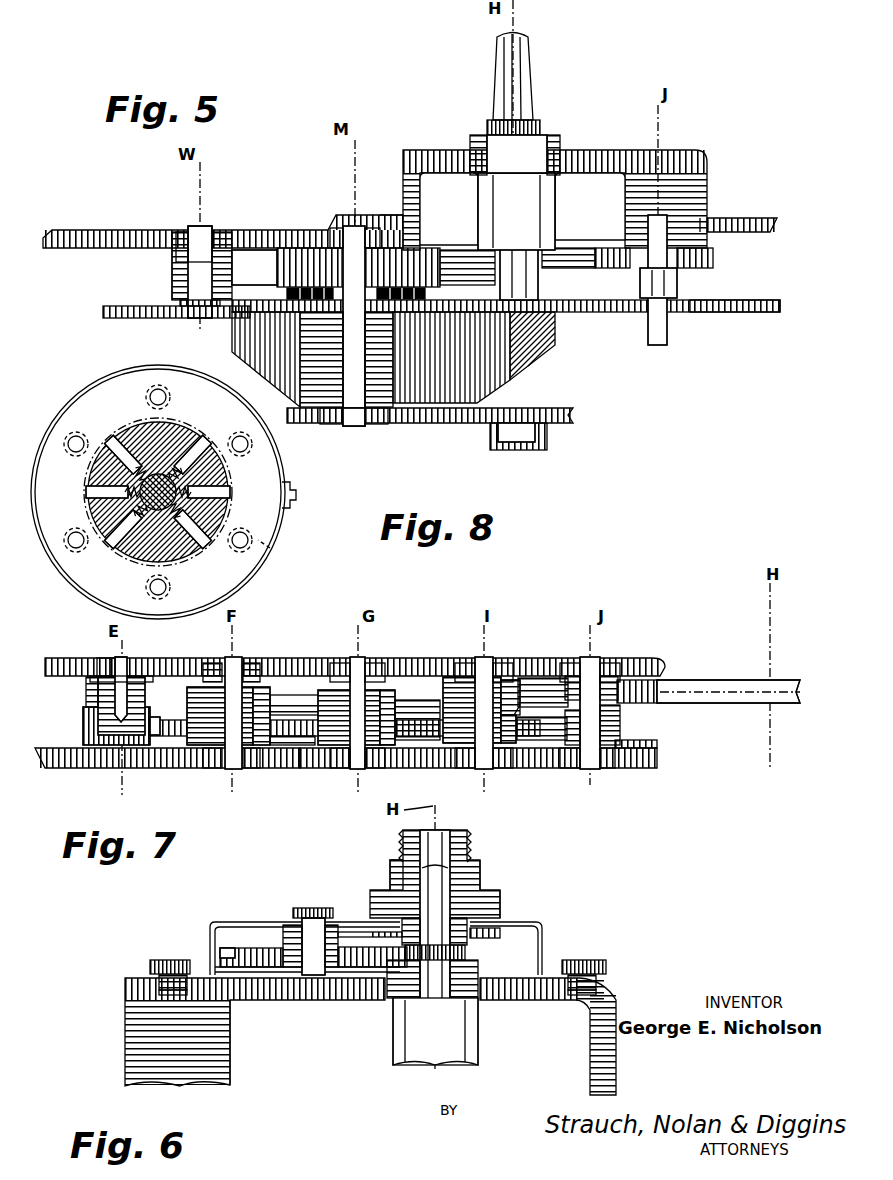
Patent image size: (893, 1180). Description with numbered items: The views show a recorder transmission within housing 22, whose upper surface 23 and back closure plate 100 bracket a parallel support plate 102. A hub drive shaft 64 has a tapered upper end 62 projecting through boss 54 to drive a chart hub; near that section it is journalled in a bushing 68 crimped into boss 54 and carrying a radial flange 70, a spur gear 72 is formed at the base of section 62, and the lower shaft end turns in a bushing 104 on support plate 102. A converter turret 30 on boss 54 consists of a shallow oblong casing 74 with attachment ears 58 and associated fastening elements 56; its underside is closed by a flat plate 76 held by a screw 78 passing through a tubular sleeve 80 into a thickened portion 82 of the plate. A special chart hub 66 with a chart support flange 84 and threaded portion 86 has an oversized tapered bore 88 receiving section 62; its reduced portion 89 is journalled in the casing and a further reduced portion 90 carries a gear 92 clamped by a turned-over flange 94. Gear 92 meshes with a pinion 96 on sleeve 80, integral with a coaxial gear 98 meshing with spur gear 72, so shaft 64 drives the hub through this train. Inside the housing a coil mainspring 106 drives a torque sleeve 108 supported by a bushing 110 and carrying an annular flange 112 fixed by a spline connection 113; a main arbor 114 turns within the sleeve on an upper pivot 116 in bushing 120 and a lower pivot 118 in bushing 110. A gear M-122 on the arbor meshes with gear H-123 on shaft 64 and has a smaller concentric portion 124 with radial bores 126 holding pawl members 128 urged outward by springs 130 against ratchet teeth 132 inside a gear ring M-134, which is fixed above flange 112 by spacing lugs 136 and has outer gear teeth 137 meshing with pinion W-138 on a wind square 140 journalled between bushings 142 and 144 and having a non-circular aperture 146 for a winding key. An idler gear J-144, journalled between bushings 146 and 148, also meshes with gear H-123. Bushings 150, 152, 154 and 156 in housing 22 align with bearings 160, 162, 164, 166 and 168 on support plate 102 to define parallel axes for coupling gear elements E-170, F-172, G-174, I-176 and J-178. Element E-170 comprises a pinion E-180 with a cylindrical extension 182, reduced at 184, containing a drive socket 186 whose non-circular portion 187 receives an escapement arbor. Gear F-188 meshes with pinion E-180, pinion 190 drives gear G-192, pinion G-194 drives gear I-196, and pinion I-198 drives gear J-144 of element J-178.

In FIG. 5, the housing 22 is at (746, 220).
In FIG. 7, the housing 22 is at (650, 658).
In FIG. 5, the upper surface of the housing 23 is at (108, 228).
In FIG. 7, the upper surface of the housing 23 is at (412, 696).
In FIG. 8, the turret 30 is at (158, 492).
In FIG. 6, the turret 30 is at (555, 920).
In FIG. 5, the boss 54 is at (708, 172).
In FIG. 6, the bolt 56 is at (150, 964).
In FIG. 6, the attachment ears 58 is at (196, 962).
In FIG. 5, the upper end of hub drive shaft 62 is at (520, 70).
In FIG. 6, the upper end of hub drive shaft 62 is at (455, 866).
In FIG. 5, the hub drive shaft 64 is at (540, 290).
In FIG. 6, the special chart hub 66 is at (486, 880).
In FIG. 5, the bushing 68 is at (562, 142).
In FIG. 5, the radial flange 70 is at (470, 140).
In FIG. 5, the spur gear 72 is at (545, 124).
In FIG. 6, the spur gear 72 is at (435, 946).
In FIG. 6, the oblong casing 74 is at (232, 922).
In FIG. 6, the flat plate 76 is at (262, 992).
In FIG. 6, the screw 78 is at (312, 993).
In FIG. 6, the tubular sleeve 80 is at (292, 993).
In FIG. 6, the thickened portion of the plate 82 is at (340, 999).
In FIG. 6, the radial chart support flange 84 is at (503, 904).
In FIG. 6, the threaded portion 86 is at (462, 838).
In FIG. 6, the tapered axial bore 88 is at (398, 864).
In FIG. 6, the reduced diameter portion 89 is at (378, 918).
In FIG. 6, the further reduced portion 90 is at (435, 963).
In FIG. 6, the gear 92 is at (506, 948).
In FIG. 6, the turned over flange 94 is at (432, 979).
In FIG. 6, the pinion 96 is at (302, 912).
In FIG. 6, the coaxial gear 98 is at (213, 1039).
In FIG. 5, the back closure plate 100 is at (436, 424).
In FIG. 5, the support plate 102 is at (110, 318).
In FIG. 7, the support plate 102 is at (64, 769).
In FIG. 5, the bushing 104 is at (556, 325).
In FIG. 5, the coil-type mainspring 106 is at (270, 377).
In FIG. 5, the torque sleeve 108 is at (326, 424).
In FIG. 5, the bushing 110 is at (378, 425).
In FIG. 5, the annular flange 112 is at (300, 386).
In FIG. 5, the spline connection 113 is at (343, 322).
In FIG. 5, the main arbor 114 is at (506, 299).
In FIG. 5, the upper pivot 116 is at (346, 226).
In FIG. 5, the lower pivot 118 is at (354, 427).
In FIG. 5, the bushing 120 is at (386, 215).
In FIG. 5, the concentric portion 124 is at (430, 273).
In FIG. 5, the radial bores 126 is at (369, 359).
In FIG. 8, the radial bores 126 is at (224, 498).
In FIG. 5, the pawl member 128 is at (309, 267).
In FIG. 8, the pawl member 128 is at (228, 487).
In FIG. 5, the spring 130 is at (357, 326).
In FIG. 8, the spring 130 is at (90, 490).
In FIG. 8, the ratchet teeth 132 is at (168, 438).
In FIG. 5, the spacing lugs 136 is at (258, 296).
In FIG. 8, the spacing lugs 136 is at (270, 548).
In FIG. 8, the gear teeth 137 is at (298, 495).
In FIG. 5, the wind square 140 is at (172, 264).
In FIG. 5, the bushing 142 is at (178, 232).
In FIG. 5, the bushing 144 is at (185, 318).
In FIG. 5, the non-circular internal aperture 146 is at (195, 228).
In FIG. 5, the bushing 148 is at (670, 315).
In FIG. 7, the bushing 150 is at (136, 660).
In FIG. 7, the bushing 152 is at (246, 656).
In FIG. 7, the bushing 154 is at (380, 660).
In FIG. 7, the bushing 156 is at (503, 660).
In FIG. 7, the bearing 160 is at (140, 769).
In FIG. 7, the bearing 162 is at (245, 770).
In FIG. 7, the bearing 164 is at (362, 770).
In FIG. 7, the bearing 166 is at (486, 770).
In FIG. 7, the bearing 168 is at (622, 744).
In FIG. 7, the cylindrical upward extension 182 is at (86, 690).
In FIG. 7, the reduced portion 184 is at (104, 658).
In FIG. 7, the coaxial drive socket 186 is at (128, 660).
In FIG. 7, the non-circular portion 187 is at (118, 656).
In FIG. 7, the pinion 190 is at (215, 746).
In FIG. 5, the pinion W-138 is at (172, 292).
In FIG. 5, the gear M-122 is at (320, 229).
In FIG. 5, the gear ring M-134 is at (256, 267).
In FIG. 8, the gear ring M-134 is at (265, 530).
In FIG. 5, the gear H-123 is at (566, 245).
In FIG. 7, the gear H-123 is at (700, 684).
In FIG. 5, the idler gear J-144 is at (705, 268).
In FIG. 7, the idler gear J-144 is at (542, 709).
In FIG. 5, the gear element J-178 is at (640, 287).
In FIG. 7, the gear element J-178 is at (552, 660).
In FIG. 7, the gear element E-170 is at (95, 704).
In FIG. 7, the pinion E-180 is at (83, 730).
In FIG. 7, the gear element F-172 is at (180, 698).
In FIG. 7, the gear F-188 is at (345, 757).
In FIG. 7, the gear G-192 is at (298, 692).
In FIG. 7, the gear element G-174 is at (334, 690).
In FIG. 7, the pinion G-194 is at (349, 742).
In FIG. 7, the gear element I-176 is at (440, 688).
In FIG. 7, the gear I-196 is at (452, 737).
In FIG. 7, the pinion I-198 is at (474, 754).